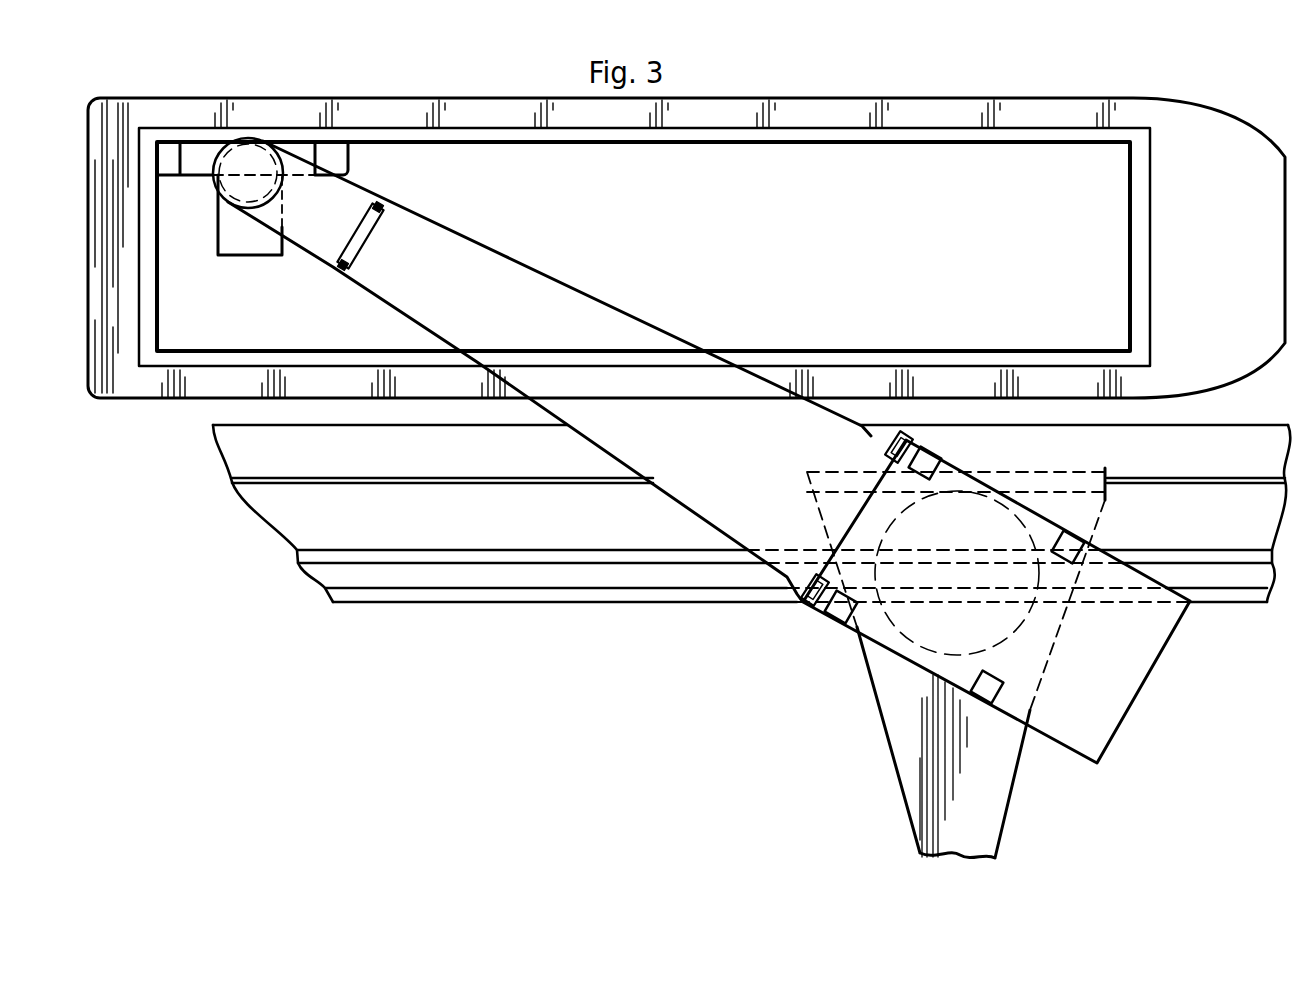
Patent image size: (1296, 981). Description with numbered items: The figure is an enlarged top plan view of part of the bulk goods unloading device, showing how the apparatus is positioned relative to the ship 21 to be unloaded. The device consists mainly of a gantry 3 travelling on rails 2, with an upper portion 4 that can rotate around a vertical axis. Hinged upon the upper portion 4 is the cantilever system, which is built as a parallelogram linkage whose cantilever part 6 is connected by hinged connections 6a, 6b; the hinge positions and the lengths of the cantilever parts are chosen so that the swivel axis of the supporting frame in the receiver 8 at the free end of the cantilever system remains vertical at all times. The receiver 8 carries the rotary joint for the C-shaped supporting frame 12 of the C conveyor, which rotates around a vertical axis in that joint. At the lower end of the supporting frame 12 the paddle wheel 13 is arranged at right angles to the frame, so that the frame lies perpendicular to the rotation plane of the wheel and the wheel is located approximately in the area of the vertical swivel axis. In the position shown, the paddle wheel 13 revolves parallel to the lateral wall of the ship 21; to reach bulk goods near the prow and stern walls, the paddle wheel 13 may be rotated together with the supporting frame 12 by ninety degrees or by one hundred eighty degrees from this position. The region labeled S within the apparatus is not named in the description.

The rails 2 is at (433, 483).
The gantry 3 is at (920, 712).
The upper portion 4 is at (1127, 653).
The cantilever part 6 is at (608, 383).
The hinged connection 6a is at (353, 263).
The hinged connection 6b is at (920, 450).
The receiver 8 is at (305, 221).
The C-shaped supporting frame 12 is at (243, 240).
The paddle wheel 13 is at (307, 150).
The ship 21 is at (1186, 256).
The receiving space S is at (781, 258).